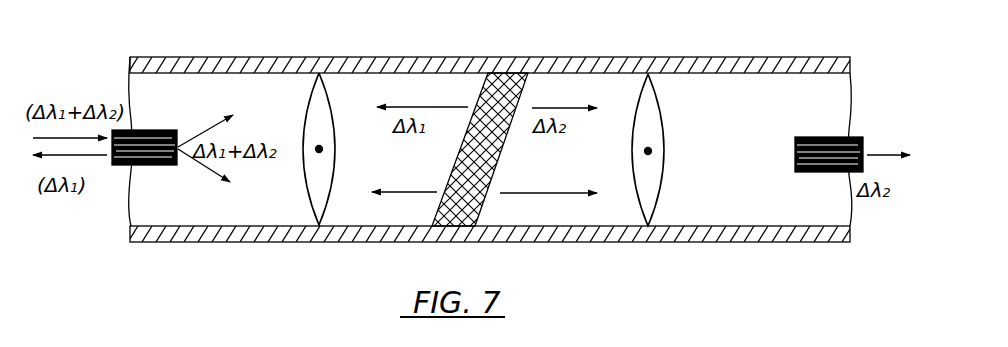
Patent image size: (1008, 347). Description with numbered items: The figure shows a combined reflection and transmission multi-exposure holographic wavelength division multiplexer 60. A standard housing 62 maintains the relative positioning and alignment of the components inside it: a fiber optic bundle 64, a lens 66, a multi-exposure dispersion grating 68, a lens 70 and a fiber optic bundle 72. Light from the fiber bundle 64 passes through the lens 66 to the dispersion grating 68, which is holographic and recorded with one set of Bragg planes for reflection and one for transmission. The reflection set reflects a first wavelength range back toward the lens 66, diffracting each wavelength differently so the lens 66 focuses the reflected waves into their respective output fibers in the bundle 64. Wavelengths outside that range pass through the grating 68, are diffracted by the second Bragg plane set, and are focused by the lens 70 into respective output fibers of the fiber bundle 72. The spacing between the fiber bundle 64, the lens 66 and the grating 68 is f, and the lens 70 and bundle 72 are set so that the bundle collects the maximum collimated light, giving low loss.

The multiplexer 60 is at (810, 50).
The housing 62 is at (447, 57).
The fiber optic bundle 64 is at (156, 130).
The lens 66 is at (313, 217).
The multi-exposure dispersion grating 68 is at (465, 220).
The lens 70 is at (658, 212).
The fiber optic bundle 72 is at (840, 137).